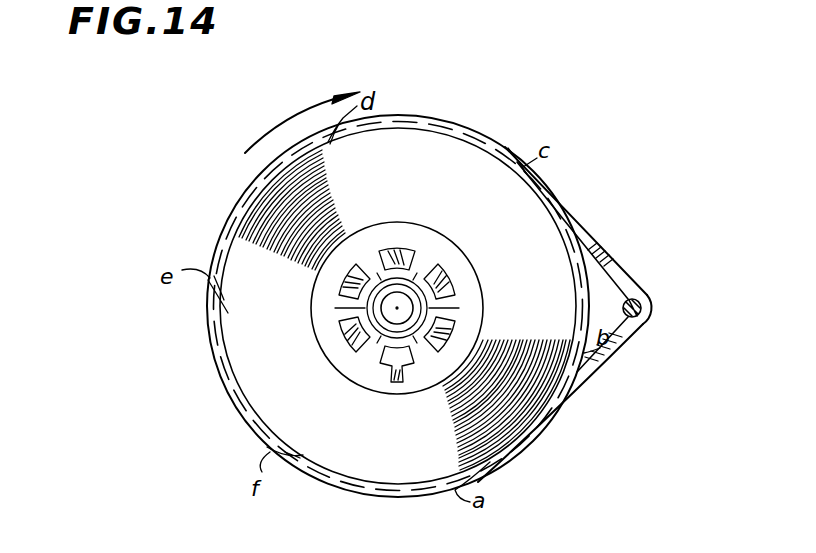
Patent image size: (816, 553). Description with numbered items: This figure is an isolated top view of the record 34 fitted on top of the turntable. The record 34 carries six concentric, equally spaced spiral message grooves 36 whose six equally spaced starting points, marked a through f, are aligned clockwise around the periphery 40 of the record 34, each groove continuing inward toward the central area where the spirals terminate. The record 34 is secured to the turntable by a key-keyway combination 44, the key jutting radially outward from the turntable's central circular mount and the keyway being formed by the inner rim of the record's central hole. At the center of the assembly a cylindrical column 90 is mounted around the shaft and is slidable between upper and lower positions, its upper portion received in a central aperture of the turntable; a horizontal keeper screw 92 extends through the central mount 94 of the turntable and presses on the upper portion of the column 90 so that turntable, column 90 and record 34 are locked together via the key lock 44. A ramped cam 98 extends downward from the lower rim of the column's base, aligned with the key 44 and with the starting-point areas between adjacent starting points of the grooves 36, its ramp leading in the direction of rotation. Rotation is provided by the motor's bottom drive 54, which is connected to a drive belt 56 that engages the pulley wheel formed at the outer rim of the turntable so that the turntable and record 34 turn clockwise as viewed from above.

The record 34 is at (213, 353).
The spiral message grooves 36 is at (272, 236).
The periphery 40 is at (343, 490).
The key-keyway combination 44 is at (398, 375).
The bottom drive 54 is at (647, 297).
The drive belt 56 is at (606, 258).
The cylindrical column 90 is at (350, 302).
The keeper screw 92 is at (437, 302).
The central mount 94 is at (445, 325).
The ramped cam 98 is at (425, 262).